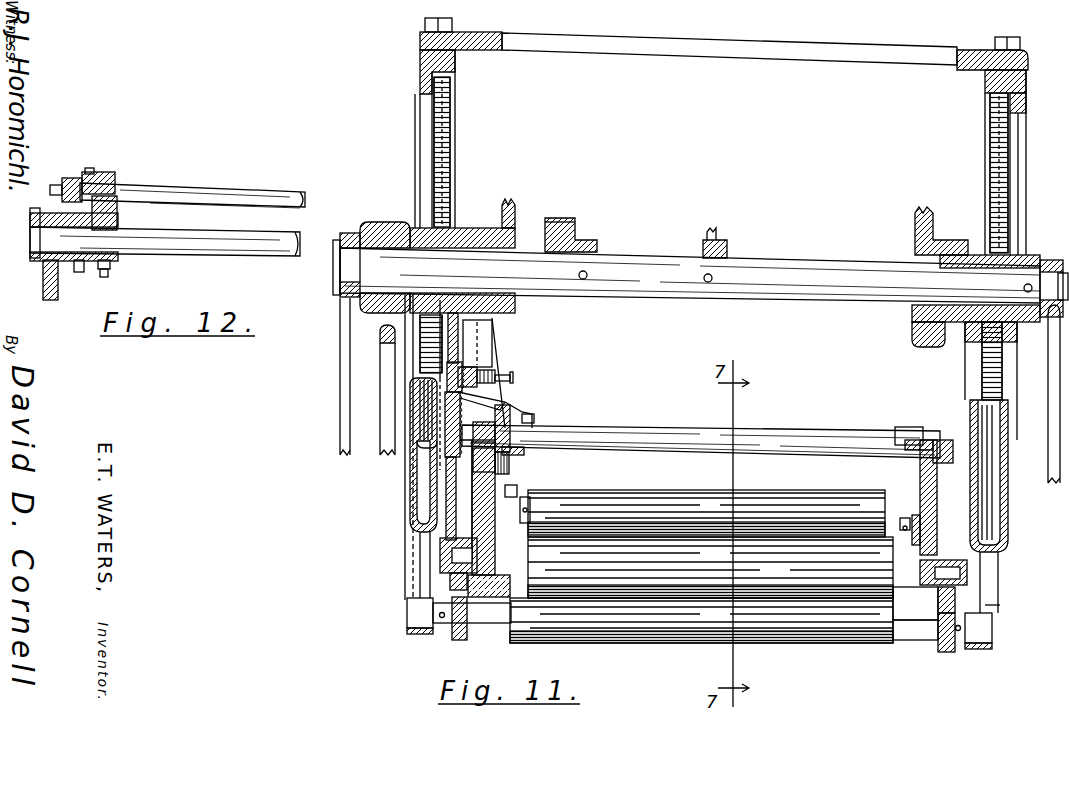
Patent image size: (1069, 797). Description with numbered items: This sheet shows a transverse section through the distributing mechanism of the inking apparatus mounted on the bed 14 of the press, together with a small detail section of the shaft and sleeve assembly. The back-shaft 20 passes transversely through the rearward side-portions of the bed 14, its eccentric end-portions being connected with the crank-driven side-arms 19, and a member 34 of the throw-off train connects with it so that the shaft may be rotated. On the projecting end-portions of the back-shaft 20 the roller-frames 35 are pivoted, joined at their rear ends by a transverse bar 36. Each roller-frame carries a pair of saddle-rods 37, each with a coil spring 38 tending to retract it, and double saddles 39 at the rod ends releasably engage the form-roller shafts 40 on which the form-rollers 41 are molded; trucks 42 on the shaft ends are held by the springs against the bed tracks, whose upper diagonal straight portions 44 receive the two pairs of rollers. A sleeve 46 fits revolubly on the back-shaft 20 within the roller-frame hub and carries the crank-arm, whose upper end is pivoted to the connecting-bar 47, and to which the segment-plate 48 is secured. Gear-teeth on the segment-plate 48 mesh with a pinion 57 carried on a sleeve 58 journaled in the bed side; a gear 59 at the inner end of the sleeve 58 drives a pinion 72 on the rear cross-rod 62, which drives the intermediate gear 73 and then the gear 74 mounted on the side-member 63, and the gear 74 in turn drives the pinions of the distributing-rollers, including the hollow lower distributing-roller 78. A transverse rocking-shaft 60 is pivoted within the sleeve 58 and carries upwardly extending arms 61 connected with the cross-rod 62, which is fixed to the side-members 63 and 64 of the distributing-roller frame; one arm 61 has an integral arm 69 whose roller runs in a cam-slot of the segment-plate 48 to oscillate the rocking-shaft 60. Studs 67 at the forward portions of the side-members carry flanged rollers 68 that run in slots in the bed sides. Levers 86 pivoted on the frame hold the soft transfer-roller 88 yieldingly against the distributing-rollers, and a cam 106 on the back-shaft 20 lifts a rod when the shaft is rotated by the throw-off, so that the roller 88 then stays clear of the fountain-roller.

In FIG. 12, the bed 14 is at (44, 292).
In FIG. 11, the bed 14 is at (518, 215).
In FIG. 11, the side-arms 19 is at (340, 370).
In FIG. 11, the back-shaft 20 is at (812, 268).
In FIG. 11, the throw-off train member 34 is at (727, 241).
In FIG. 11, the roller-frames 35 is at (415, 110).
In FIG. 11, the transverse bar 36 is at (810, 46).
In FIG. 11, the saddle-rods 37 is at (440, 170).
In FIG. 11, the coil spring 38 is at (440, 140).
In FIG. 11, the double saddles 39 is at (416, 634).
In FIG. 11, the form-roller shafts 40 is at (407, 613).
In FIG. 11, the form-rollers 41 is at (650, 643).
In FIG. 11, the trucks 42 is at (458, 640).
In FIG. 11, the upper straight track portions 44 is at (1000, 606).
In FIG. 11, the sleeve 46 is at (362, 302).
In FIG. 11, the connecting-bar 47 is at (383, 398).
In FIG. 11, the segment-plate 48 is at (462, 345).
In FIG. 12, the pinion 57 is at (34, 260).
In FIG. 11, the pinion 57 is at (440, 470).
In FIG. 12, the sleeve 58 is at (62, 216).
In FIG. 12, the gear 59 is at (80, 270).
In FIG. 11, the gear 59 is at (507, 400).
In FIG. 12, the rocking-shaft 60 is at (200, 256).
In FIG. 11, the rocking-shaft 60 is at (630, 430).
In FIG. 12, the arms 61 is at (112, 174).
In FIG. 11, the arms 61 is at (512, 450).
In FIG. 12, the cross-rod 62 is at (208, 195).
In FIG. 11, the cross-rod 62 is at (676, 448).
In FIG. 11, the side-member 63 is at (482, 576).
In FIG. 11, the side-member 64 is at (915, 603).
In FIG. 11, the studs 67 is at (440, 550).
In FIG. 11, the flanged rollers 68 is at (450, 582).
In FIG. 11, the arm 69 is at (500, 395).
In FIG. 12, the pinion 72 is at (89, 168).
In FIG. 11, the pinion 72 is at (534, 418).
In FIG. 11, the intermediate gear 73 is at (512, 480).
In FIG. 11, the gear 74 is at (500, 597).
In FIG. 11, the lower distributing-roller 78 is at (710, 567).
In FIG. 11, the levers 86 is at (545, 490).
In FIG. 11, the roller 88 is at (815, 498).
In FIG. 11, the cam 106 is at (563, 222).